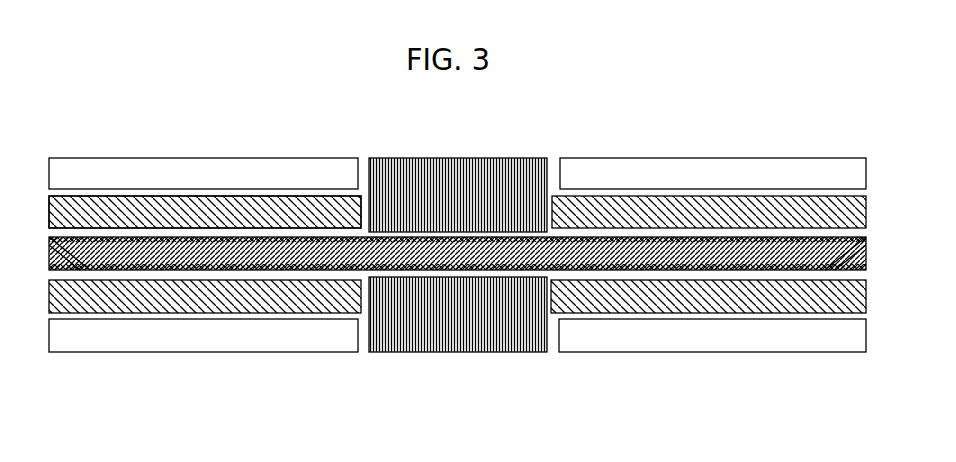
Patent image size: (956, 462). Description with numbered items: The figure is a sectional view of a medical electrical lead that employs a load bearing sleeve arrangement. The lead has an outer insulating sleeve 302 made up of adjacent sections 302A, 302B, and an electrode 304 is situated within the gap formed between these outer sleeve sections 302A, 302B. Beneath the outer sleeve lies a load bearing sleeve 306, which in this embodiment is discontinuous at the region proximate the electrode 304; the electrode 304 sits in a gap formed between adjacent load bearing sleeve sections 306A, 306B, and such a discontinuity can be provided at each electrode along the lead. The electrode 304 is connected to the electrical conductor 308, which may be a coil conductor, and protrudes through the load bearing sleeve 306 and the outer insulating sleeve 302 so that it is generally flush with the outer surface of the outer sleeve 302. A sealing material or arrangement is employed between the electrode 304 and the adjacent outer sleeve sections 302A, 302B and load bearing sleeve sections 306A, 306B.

The outer insulating sleeve 302 is at (261, 141).
The outer sleeve section 302A is at (132, 162).
The outer sleeve section 302B is at (736, 158).
The electrode 304 is at (475, 162).
The load bearing sleeve 306 is at (48, 212).
The load bearing sleeve section 306A is at (297, 200).
The load bearing sleeve section 306B is at (603, 203).
The electrical conductor 308 is at (49, 263).